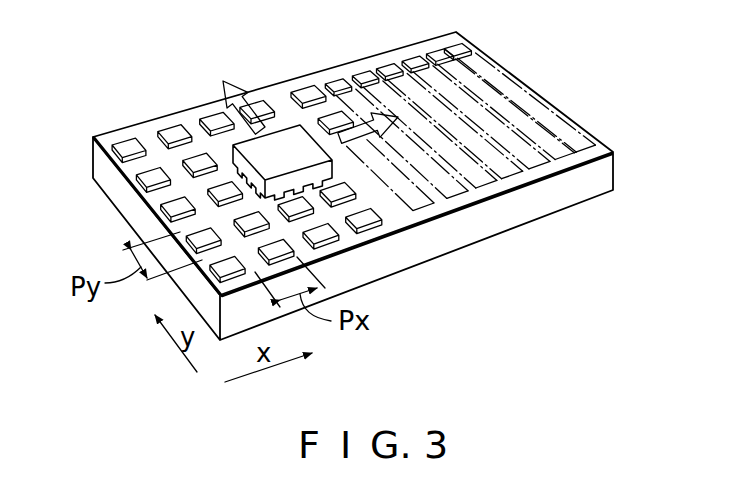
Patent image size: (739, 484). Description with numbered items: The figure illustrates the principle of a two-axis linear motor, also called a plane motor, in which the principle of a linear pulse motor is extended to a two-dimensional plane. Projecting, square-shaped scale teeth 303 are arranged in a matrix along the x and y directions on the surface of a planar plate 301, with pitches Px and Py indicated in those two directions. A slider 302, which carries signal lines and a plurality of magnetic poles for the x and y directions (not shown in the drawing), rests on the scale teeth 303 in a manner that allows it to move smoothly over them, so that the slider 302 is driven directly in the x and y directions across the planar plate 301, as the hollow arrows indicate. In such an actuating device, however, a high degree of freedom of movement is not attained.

The planar plate 301 is at (600, 173).
The slider 302 is at (290, 142).
The scale teeth 303 is at (150, 178).